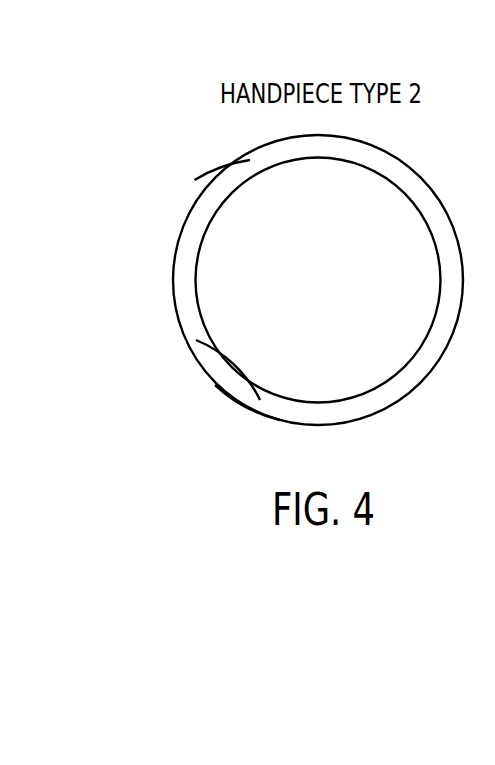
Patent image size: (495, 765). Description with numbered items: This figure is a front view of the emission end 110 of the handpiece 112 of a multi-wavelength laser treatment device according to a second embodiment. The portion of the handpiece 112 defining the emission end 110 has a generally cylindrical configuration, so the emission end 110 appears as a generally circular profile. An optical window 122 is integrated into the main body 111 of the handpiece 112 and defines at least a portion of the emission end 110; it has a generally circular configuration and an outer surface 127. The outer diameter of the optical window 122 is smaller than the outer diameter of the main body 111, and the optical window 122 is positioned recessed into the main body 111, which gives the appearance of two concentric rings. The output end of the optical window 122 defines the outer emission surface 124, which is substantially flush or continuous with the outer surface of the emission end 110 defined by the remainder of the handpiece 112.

The emission end 110 is at (377, 160).
The main body 111 is at (358, 417).
The handpiece 112 is at (241, 150).
The outer surface 127 is at (231, 192).
The outer emission surface 124 is at (227, 332).
The optical window 122 is at (241, 404).